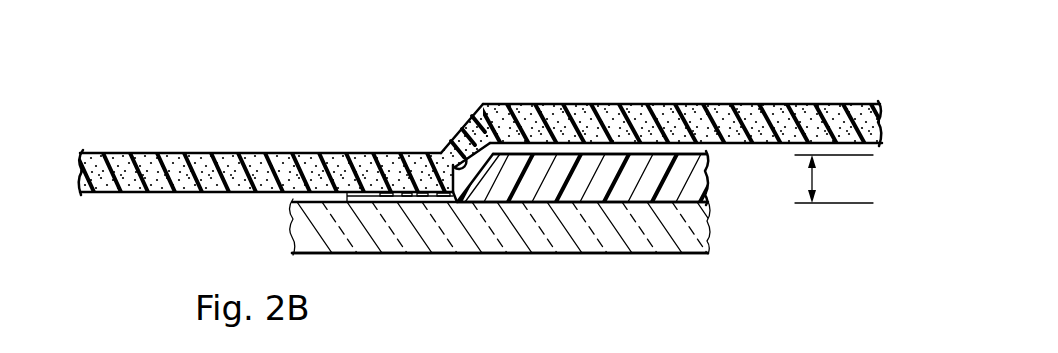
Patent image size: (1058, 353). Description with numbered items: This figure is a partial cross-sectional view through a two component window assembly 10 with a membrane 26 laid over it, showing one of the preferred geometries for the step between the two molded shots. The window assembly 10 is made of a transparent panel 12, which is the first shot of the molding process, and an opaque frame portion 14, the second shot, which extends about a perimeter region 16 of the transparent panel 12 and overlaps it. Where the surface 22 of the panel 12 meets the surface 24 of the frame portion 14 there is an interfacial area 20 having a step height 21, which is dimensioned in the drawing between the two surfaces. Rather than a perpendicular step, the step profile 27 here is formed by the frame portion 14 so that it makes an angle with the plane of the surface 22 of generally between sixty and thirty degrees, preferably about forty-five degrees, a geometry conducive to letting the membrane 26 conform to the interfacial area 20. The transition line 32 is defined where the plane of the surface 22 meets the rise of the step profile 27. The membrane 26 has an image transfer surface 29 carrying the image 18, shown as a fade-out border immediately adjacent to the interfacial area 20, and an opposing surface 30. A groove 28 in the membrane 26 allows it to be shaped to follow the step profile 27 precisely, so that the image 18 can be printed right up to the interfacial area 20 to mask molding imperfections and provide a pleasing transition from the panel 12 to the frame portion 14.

The window assembly 10 is at (241, 229).
The transparent panel 12 is at (678, 228).
The frame portion 14 is at (678, 175).
The perimeter region 16 is at (616, 262).
The image 18 is at (396, 198).
The interfacial area 20 is at (463, 211).
The step height 21 is at (812, 183).
The surface of the transparent panel 22 is at (347, 200).
The surface of the frame portion 24 is at (592, 152).
The membrane 26 is at (660, 112).
The step profile 27 is at (465, 158).
The groove 28 is at (440, 153).
The image transfer surface of the membrane 29 is at (118, 192).
The opposing surface of the membrane 30 is at (283, 153).
The transition line 32 is at (452, 165).